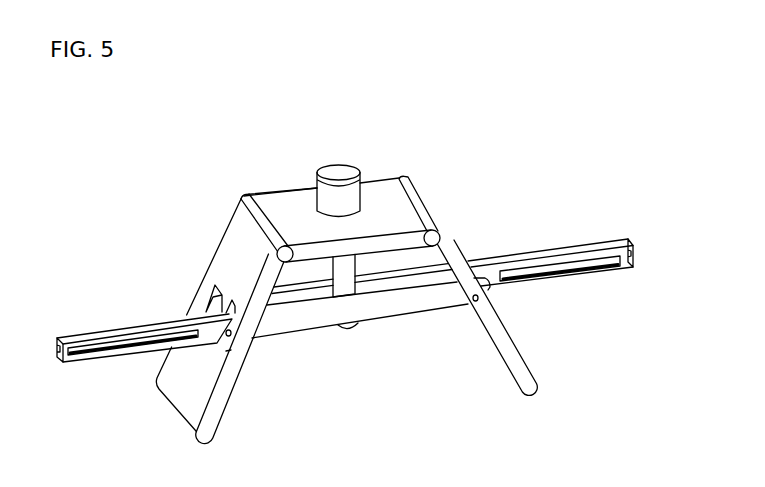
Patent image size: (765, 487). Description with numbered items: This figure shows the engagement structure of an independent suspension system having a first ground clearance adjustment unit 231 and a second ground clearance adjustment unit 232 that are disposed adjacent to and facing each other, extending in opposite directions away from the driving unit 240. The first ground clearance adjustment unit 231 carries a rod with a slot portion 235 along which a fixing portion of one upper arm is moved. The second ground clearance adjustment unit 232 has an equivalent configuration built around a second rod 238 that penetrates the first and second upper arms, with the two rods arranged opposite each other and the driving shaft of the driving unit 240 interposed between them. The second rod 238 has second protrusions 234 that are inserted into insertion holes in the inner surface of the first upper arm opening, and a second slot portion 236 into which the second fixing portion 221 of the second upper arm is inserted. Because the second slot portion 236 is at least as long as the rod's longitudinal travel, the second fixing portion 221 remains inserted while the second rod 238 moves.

The driving unit 240 is at (337, 172).
The first ground clearance adjustment unit 231 is at (527, 252).
The slot portion 235 is at (612, 266).
The second rod 238 is at (411, 307).
The second ground clearance adjustment unit 232 is at (377, 325).
The second slot portion 236 is at (101, 348).
The second fixing portion 221 is at (231, 336).
The second protrusions 234 is at (480, 302).